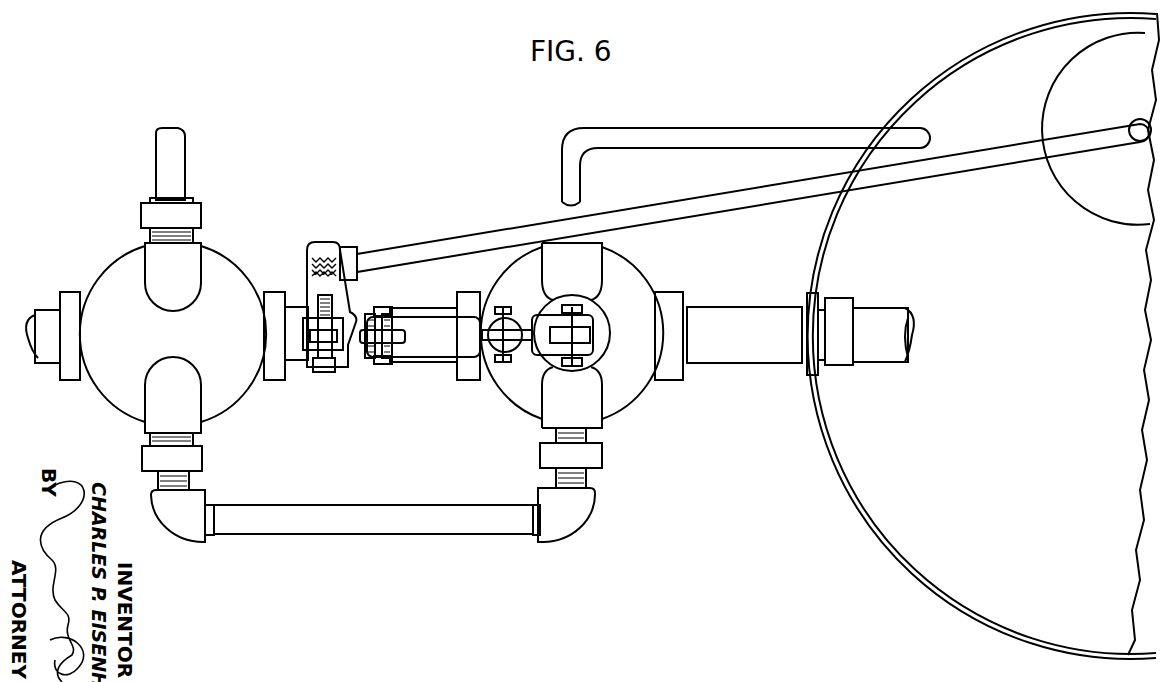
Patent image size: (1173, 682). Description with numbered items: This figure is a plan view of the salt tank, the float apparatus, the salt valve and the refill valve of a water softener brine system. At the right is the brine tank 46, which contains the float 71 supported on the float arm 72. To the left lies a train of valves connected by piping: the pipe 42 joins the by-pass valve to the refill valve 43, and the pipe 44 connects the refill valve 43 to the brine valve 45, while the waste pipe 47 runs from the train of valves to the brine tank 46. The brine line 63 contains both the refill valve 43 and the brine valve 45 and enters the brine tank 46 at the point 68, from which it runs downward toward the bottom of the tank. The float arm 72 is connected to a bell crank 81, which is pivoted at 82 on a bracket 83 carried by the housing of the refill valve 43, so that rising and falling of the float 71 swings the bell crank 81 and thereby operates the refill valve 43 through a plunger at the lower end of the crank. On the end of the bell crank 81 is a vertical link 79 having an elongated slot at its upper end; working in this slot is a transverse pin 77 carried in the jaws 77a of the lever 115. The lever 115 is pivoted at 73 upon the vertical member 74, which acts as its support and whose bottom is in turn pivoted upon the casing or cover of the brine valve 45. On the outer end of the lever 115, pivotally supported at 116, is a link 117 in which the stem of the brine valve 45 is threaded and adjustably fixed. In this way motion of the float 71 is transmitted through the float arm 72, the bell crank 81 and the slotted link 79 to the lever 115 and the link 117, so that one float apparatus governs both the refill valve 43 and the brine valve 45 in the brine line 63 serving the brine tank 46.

The pipe connecting the by-pass valve to the refill valve 42 is at (157, 158).
The refill valve 43 is at (112, 268).
The pipe connecting the refill valve to the brine valve 44 is at (385, 505).
The brine valve 45 is at (648, 273).
The brine tank 46 is at (927, 91).
The waste pipe 47 is at (735, 128).
The brine line 63 is at (47, 305).
The brine line entry point 68 is at (848, 297).
The float 71 is at (1078, 69).
The float arm 72 is at (762, 184).
The pivot of lever 73 is at (505, 354).
The vertical member 74 is at (510, 322).
The transverse pin 77 is at (379, 358).
The jaws of the lever 77a is at (371, 316).
The vertical link 79 is at (406, 334).
The bell crank 81 is at (355, 356).
The pivot of bell crank 82 is at (323, 373).
The bracket 83 is at (300, 350).
The lever 115 is at (440, 352).
The pivot of link 116 is at (571, 368).
The link 117 is at (592, 338).